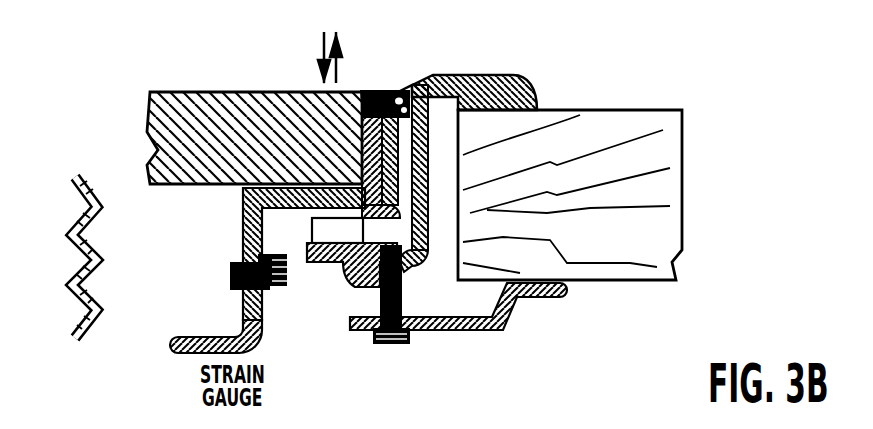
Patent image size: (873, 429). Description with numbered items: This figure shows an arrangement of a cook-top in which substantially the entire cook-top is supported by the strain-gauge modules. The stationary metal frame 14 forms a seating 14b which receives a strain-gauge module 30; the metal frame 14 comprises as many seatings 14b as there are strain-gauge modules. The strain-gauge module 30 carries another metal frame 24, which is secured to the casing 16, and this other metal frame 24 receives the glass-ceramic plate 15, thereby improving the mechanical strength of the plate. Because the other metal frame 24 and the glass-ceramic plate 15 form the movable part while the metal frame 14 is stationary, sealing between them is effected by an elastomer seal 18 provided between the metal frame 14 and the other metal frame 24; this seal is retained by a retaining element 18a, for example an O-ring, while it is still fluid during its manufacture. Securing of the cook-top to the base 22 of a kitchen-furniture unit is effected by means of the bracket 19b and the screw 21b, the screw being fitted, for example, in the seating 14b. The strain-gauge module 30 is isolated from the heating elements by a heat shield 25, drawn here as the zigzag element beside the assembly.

The metal frame 14 is at (510, 76).
The seating 14b is at (345, 265).
The glass-ceramic plate 15 is at (220, 92).
The casing 16 is at (205, 337).
The elastomer seal 18 is at (382, 92).
The retaining element 18a is at (398, 92).
The bracket 19b is at (505, 330).
The screw 21b is at (402, 343).
The base 22 is at (627, 245).
The other metal frame 24 is at (242, 228).
The heat shield 25 is at (72, 247).
The strain-gauge module 30 is at (320, 226).